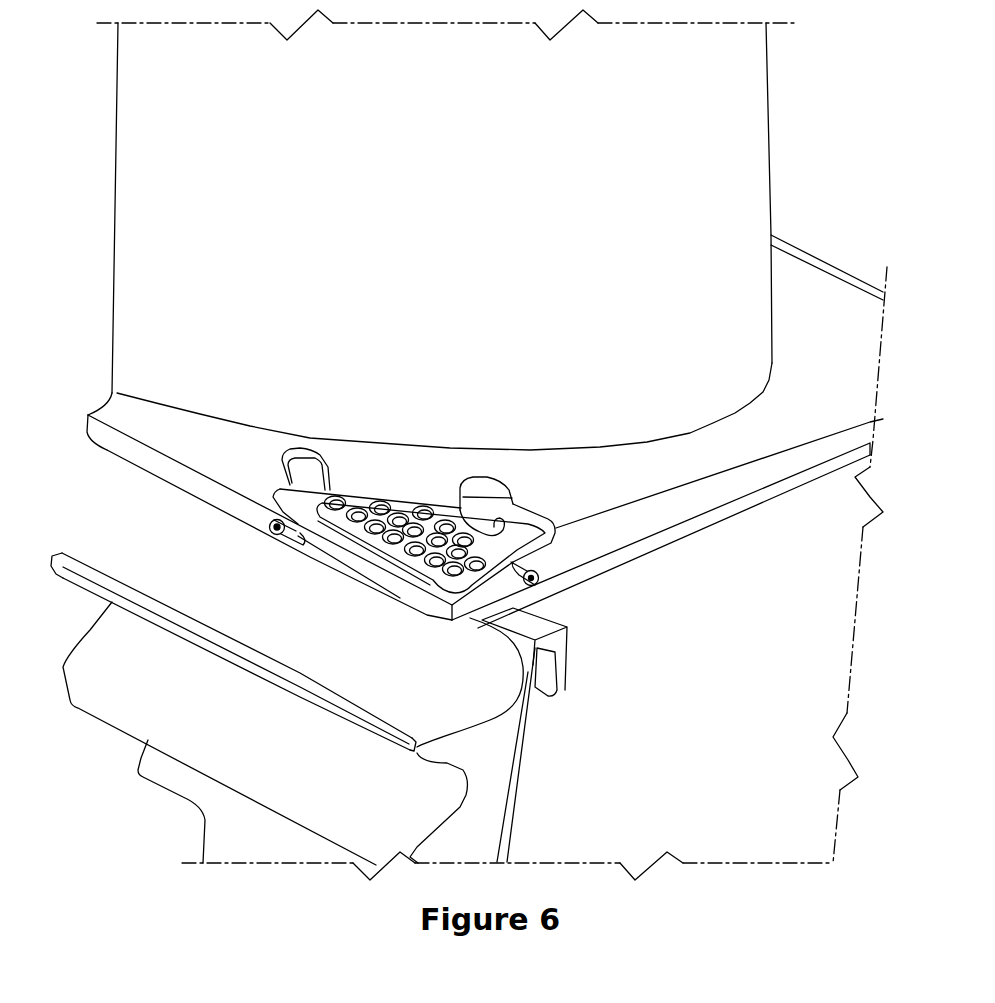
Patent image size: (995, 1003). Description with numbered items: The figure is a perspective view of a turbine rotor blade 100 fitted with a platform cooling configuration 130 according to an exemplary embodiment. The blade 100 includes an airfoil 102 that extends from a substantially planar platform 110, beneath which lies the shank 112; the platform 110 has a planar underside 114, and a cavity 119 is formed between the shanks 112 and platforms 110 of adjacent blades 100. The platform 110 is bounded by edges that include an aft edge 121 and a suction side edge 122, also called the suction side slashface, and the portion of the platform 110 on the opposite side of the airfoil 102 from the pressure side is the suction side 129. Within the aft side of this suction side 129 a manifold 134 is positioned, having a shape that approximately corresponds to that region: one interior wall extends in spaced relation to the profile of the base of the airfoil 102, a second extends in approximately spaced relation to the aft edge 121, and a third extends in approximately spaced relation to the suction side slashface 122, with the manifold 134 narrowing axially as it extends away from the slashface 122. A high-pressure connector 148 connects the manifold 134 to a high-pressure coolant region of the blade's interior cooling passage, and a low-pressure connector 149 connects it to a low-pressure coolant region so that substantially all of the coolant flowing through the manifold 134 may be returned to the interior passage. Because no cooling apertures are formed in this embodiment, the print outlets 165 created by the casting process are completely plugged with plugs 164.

The turbine rotor blade 100 is at (98, 187).
The airfoil 102 is at (535, 311).
The platform 110 is at (477, 488).
The shank 112 is at (160, 702).
The underside 114 is at (752, 520).
The cavity 119 is at (663, 672).
The aft edge 121 is at (152, 460).
The suction side edge 122 is at (613, 533).
The suction side 129 is at (667, 480).
The platform cooling configuration 130 is at (410, 512).
The manifold 134 is at (378, 535).
The high-pressure connector 148 is at (490, 493).
The low-pressure connector 149 is at (308, 468).
The plug 164 is at (274, 530).
The print outlet 165 is at (279, 532).